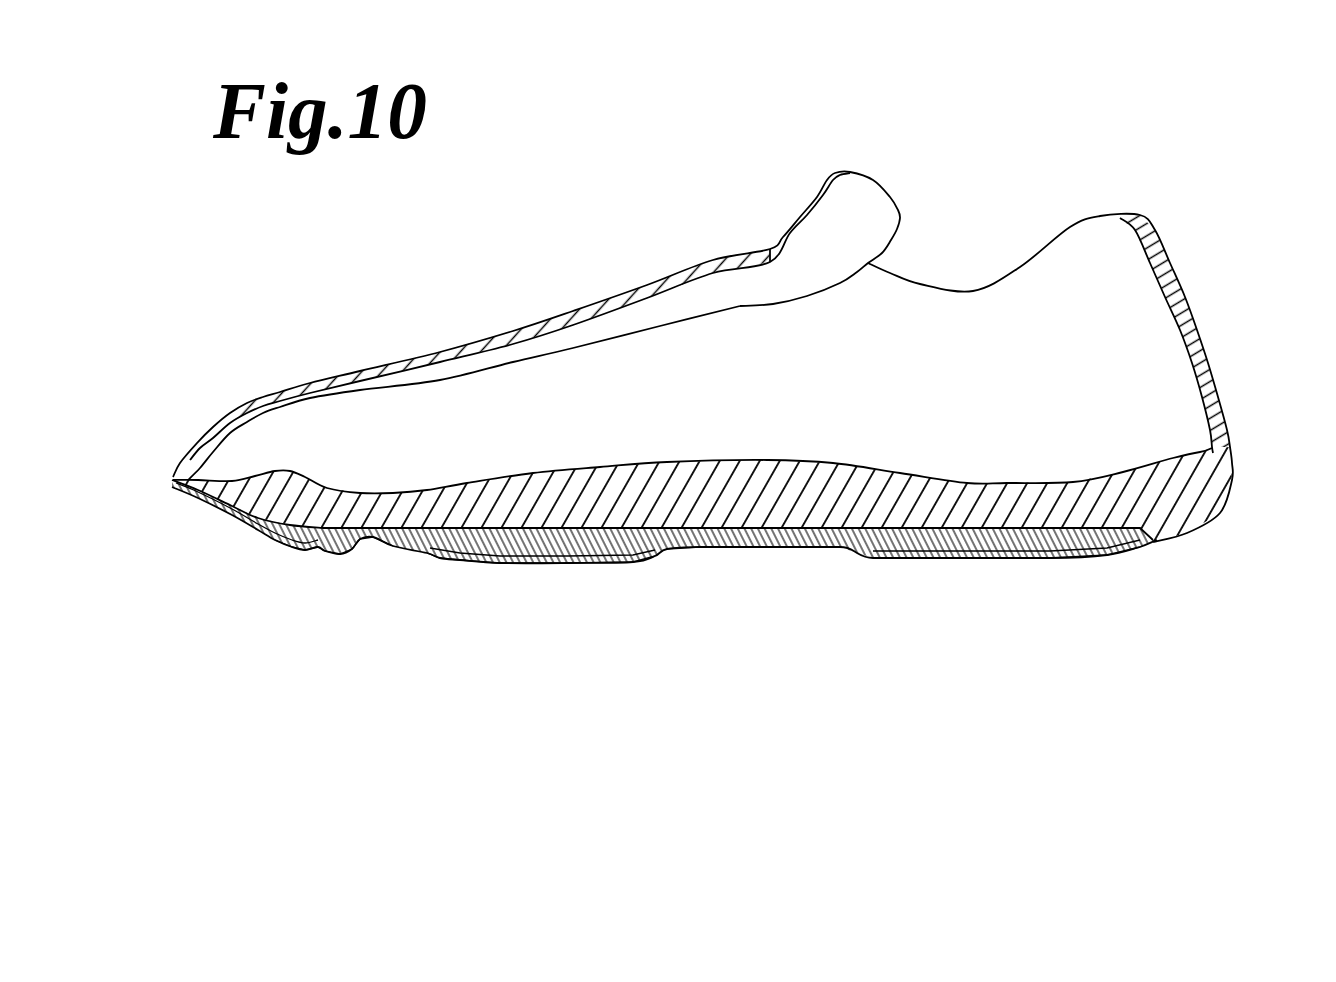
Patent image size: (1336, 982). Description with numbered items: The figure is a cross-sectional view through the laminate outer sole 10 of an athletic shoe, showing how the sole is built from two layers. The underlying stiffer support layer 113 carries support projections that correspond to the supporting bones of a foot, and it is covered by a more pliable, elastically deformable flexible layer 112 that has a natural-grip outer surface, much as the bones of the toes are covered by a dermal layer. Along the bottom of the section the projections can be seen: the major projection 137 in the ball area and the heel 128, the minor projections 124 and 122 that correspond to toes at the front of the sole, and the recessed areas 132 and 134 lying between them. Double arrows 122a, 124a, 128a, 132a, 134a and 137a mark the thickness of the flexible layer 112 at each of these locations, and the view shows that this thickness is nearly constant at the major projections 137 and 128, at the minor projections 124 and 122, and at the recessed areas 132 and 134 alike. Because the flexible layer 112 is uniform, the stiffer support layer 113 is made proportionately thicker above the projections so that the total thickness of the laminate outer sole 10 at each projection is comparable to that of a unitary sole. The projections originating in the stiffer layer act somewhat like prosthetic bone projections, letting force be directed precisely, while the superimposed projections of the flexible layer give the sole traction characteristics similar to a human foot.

The laminate outer sole 10 is at (180, 539).
The flexible layer 112 is at (1158, 548).
The stiffer support layer 113 is at (1105, 523).
The toe projection 122 is at (348, 554).
The double arrow 122a is at (333, 582).
The toe projection 124 is at (280, 548).
The double arrow 124a is at (302, 497).
The heel projection 128 is at (1050, 562).
The double arrow 128a is at (1007, 508).
The recessed area 132 is at (360, 552).
The double arrow 132a is at (402, 505).
The recessed area 134 is at (758, 550).
The double arrow 134a is at (790, 508).
The major projection 137 is at (500, 565).
The double arrow 137a is at (520, 505).